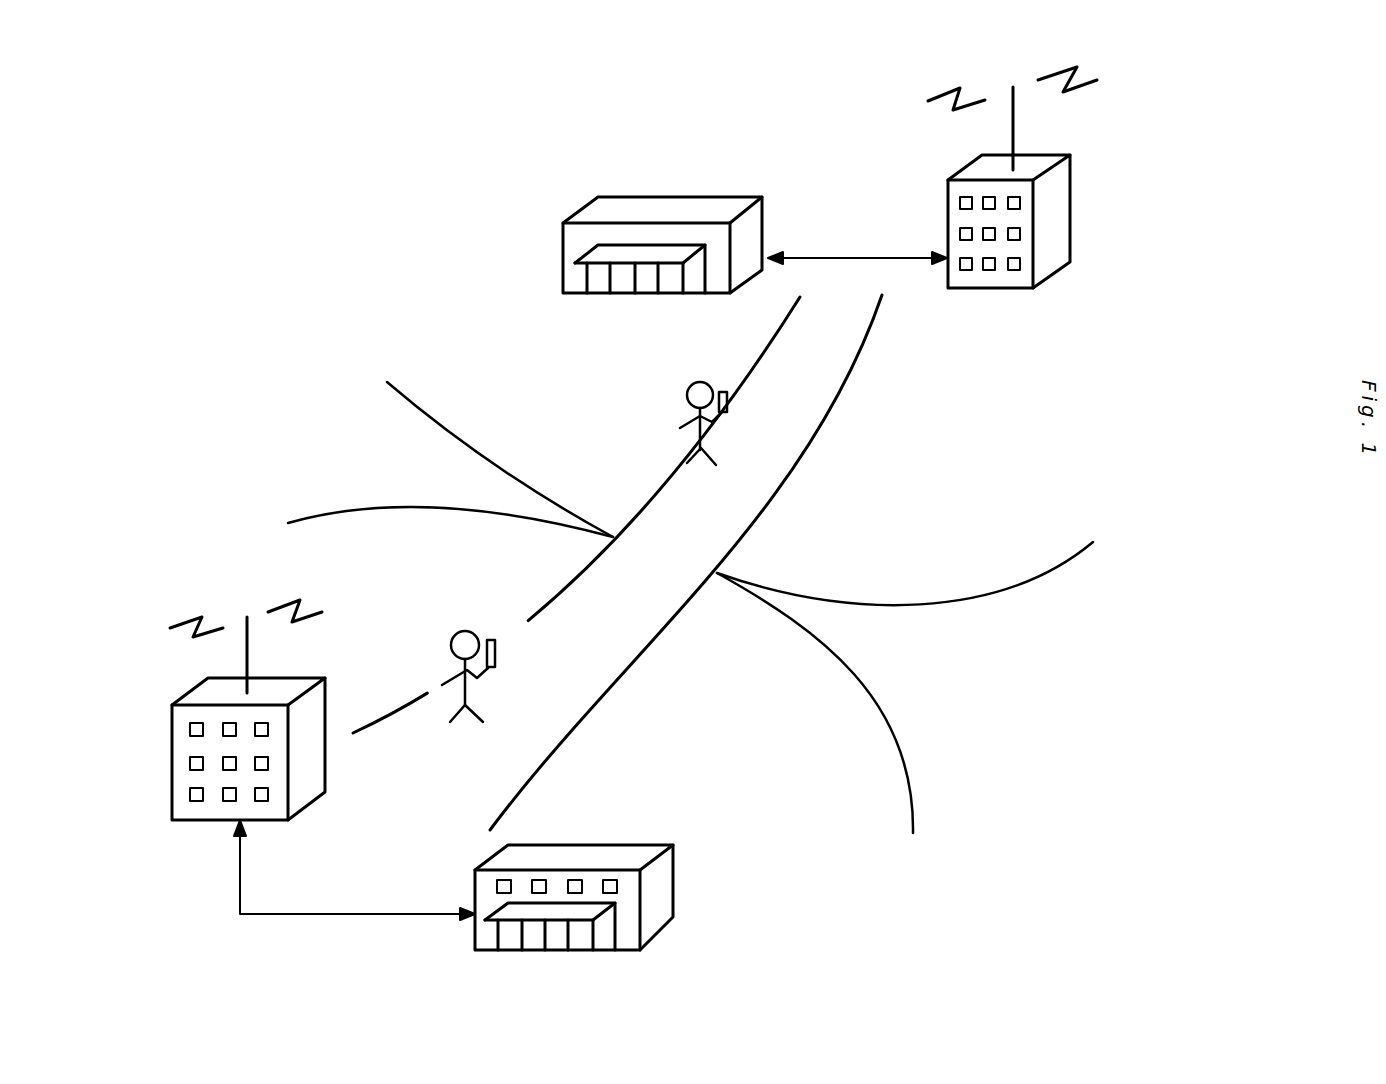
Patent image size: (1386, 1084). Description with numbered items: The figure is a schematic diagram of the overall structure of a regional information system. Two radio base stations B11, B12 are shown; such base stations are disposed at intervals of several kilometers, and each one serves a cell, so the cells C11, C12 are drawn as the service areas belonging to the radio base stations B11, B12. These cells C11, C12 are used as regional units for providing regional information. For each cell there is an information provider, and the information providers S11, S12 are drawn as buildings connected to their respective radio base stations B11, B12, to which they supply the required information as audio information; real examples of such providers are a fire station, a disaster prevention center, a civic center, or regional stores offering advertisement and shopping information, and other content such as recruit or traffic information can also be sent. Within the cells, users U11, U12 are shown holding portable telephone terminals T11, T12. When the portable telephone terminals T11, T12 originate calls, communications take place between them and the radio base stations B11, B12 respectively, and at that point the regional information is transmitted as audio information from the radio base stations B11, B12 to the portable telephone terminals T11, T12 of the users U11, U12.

The information provider S12 is at (680, 197).
The radio base station B12 is at (1072, 222).
The user U12 is at (686, 396).
The portable telephone terminal T12 is at (729, 392).
The user U11 is at (447, 645).
The portable telephone terminal T11 is at (503, 640).
The radio base station B11 is at (170, 752).
The information provider S11 is at (677, 883).
The cell C11 is at (890, 765).
The cell C12 is at (965, 565).